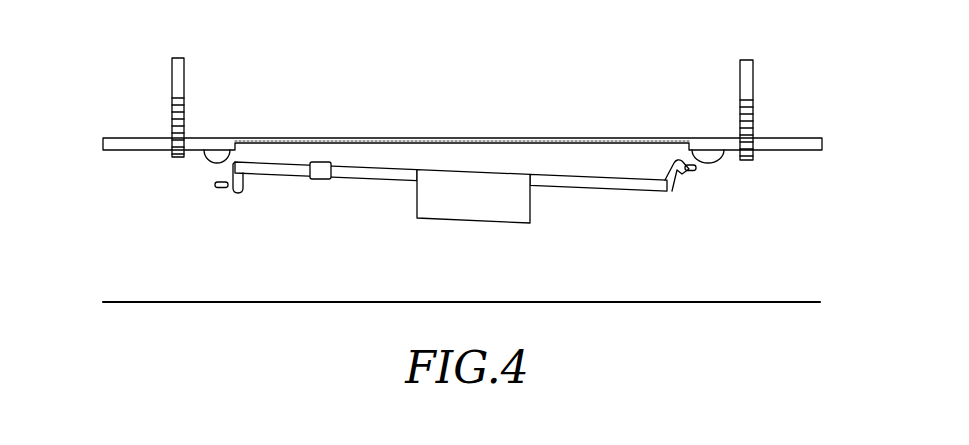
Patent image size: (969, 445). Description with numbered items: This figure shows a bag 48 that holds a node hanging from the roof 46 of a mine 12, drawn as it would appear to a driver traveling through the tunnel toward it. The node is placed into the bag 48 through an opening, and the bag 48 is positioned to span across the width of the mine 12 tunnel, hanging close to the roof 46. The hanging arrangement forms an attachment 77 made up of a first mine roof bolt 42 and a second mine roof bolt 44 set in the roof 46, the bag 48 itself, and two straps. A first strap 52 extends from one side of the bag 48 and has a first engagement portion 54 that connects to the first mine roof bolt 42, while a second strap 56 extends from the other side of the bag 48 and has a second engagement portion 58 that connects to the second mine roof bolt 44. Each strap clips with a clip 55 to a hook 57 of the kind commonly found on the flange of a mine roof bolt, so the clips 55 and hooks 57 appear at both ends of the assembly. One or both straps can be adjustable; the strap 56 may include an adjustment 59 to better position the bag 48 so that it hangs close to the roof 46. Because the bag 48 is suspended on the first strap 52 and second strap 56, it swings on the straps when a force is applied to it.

The mine 12 is at (432, 74).
The first mine roof bolt 42 is at (181, 90).
The second mine roof bolt 44 is at (740, 86).
The mine roof 46 is at (490, 138).
The bag 48 is at (460, 219).
The first strap 52 is at (251, 194).
The first engagement portion 54 is at (172, 207).
The clip 55 is at (222, 188).
The second strap 56 is at (596, 192).
The hook 57 is at (208, 162).
The second engagement portion 58 is at (722, 208).
The adjustment 59 is at (324, 200).
The attachment 77 is at (556, 238).